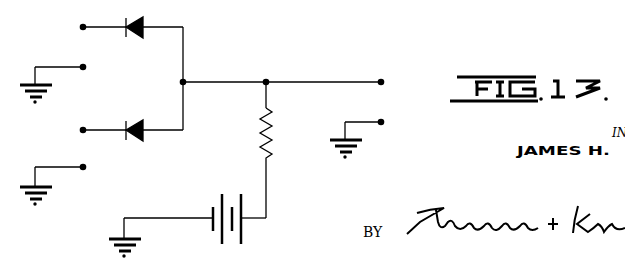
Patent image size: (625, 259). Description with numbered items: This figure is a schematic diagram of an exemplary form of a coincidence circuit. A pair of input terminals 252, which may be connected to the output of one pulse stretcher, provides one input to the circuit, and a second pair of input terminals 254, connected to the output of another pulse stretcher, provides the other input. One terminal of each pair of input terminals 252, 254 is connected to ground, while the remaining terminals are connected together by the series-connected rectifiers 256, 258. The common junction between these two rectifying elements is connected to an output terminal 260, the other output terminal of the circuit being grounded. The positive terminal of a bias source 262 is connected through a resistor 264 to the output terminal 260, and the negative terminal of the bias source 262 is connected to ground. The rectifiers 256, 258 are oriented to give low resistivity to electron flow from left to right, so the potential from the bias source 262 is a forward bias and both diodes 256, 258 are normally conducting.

The pair of input terminals 252 is at (82, 44).
The second pair of input terminals 254 is at (82, 150).
The rectifier 256 is at (138, 24).
The rectifier 258 is at (135, 121).
The output terminal 260 is at (380, 79).
The bias source 262 is at (232, 195).
The resistor 264 is at (272, 110).